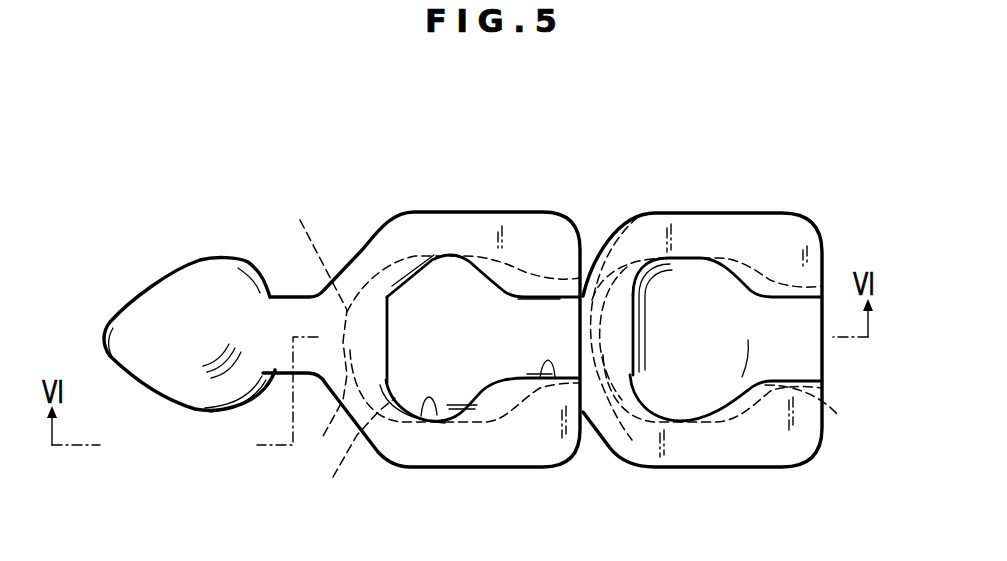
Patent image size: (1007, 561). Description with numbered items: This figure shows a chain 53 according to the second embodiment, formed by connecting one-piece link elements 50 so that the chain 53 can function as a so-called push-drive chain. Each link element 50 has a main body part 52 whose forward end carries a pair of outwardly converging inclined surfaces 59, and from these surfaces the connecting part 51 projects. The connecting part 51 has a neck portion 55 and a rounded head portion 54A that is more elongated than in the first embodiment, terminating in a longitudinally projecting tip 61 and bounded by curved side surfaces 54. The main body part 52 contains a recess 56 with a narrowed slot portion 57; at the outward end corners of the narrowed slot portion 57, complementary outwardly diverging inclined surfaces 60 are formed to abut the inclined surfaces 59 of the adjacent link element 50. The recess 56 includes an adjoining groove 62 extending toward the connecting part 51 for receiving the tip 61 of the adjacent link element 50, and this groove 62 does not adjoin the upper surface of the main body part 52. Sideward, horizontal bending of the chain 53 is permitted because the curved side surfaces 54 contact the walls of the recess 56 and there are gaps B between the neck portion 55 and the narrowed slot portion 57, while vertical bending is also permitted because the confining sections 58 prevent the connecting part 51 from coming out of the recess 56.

The link element 50 is at (425, 203).
The connecting part 51 is at (222, 253).
The main body part 52 is at (590, 262).
The chain 53 is at (496, 162).
The curved side surfaces 54 is at (210, 257).
The rounded head portion 54A is at (130, 289).
The neck portion 55 is at (557, 204).
The recess 56 is at (438, 420).
The narrowed slot portion 57 is at (813, 358).
The confining sections 58 is at (512, 313).
The inclined surfaces 59 is at (358, 246).
The inclined surfaces 60 is at (638, 217).
The tip 61 is at (106, 334).
The groove 62 is at (643, 474).
The gaps B is at (596, 226).